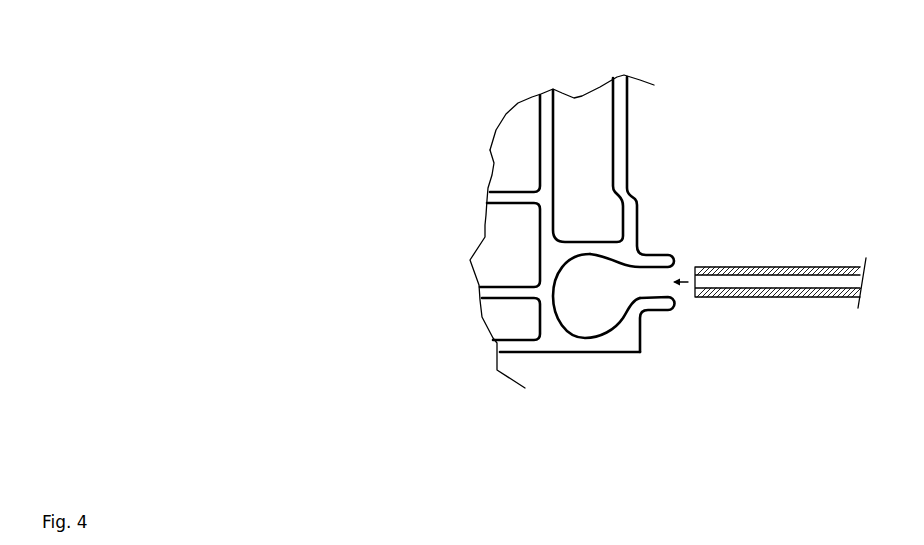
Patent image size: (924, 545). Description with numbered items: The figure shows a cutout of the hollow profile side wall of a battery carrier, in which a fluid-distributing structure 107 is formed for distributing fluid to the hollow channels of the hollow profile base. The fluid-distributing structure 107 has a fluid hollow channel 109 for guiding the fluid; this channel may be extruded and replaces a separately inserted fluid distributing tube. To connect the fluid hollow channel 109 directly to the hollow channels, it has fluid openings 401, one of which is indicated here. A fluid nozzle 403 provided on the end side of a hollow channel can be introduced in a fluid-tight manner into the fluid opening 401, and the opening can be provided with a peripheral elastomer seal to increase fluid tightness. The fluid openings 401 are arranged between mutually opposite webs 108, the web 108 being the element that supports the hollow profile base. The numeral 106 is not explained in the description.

The bottom wall of holder 106 is at (628, 342).
The fluid-distributing structure 107 is at (497, 110).
The web 108 is at (658, 256).
The fluid hollow channel 109 is at (592, 305).
The fluid opening 401 is at (657, 282).
The fluid nozzle 403 is at (767, 283).